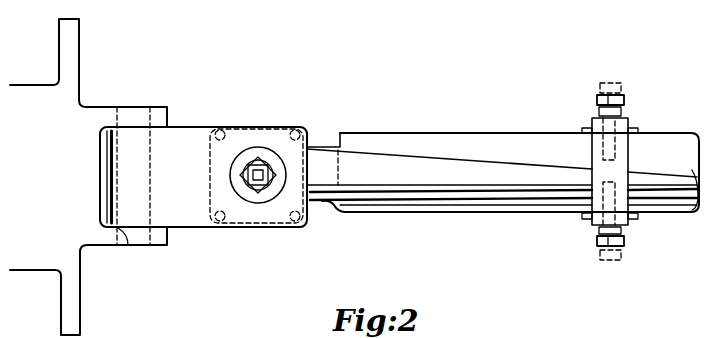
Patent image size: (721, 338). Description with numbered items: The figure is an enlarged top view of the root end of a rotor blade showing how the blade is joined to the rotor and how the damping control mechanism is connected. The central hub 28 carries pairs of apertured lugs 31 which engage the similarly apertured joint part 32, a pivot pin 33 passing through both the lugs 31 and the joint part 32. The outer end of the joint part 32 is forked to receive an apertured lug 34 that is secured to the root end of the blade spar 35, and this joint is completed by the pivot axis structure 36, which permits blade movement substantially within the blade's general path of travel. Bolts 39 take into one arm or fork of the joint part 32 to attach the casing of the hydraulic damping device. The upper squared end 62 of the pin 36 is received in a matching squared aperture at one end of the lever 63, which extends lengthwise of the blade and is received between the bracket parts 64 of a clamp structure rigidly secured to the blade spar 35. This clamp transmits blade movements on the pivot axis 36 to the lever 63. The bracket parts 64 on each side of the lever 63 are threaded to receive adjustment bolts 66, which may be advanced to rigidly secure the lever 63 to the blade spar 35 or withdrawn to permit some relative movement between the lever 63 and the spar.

The central hub 28 is at (70, 120).
The apertured lugs 31 is at (160, 108).
The joint part 32 is at (190, 213).
The pivot pin 33 is at (120, 247).
The apertured lug 34 is at (325, 147).
The blade spar 35 is at (497, 140).
The pivot axis structure 36 is at (258, 190).
The bolts 39 is at (305, 220).
The upper squared end 62 is at (248, 160).
The lever 63 is at (395, 178).
The bracket parts 64 is at (622, 123).
The adjustment bolts 66 is at (618, 93).